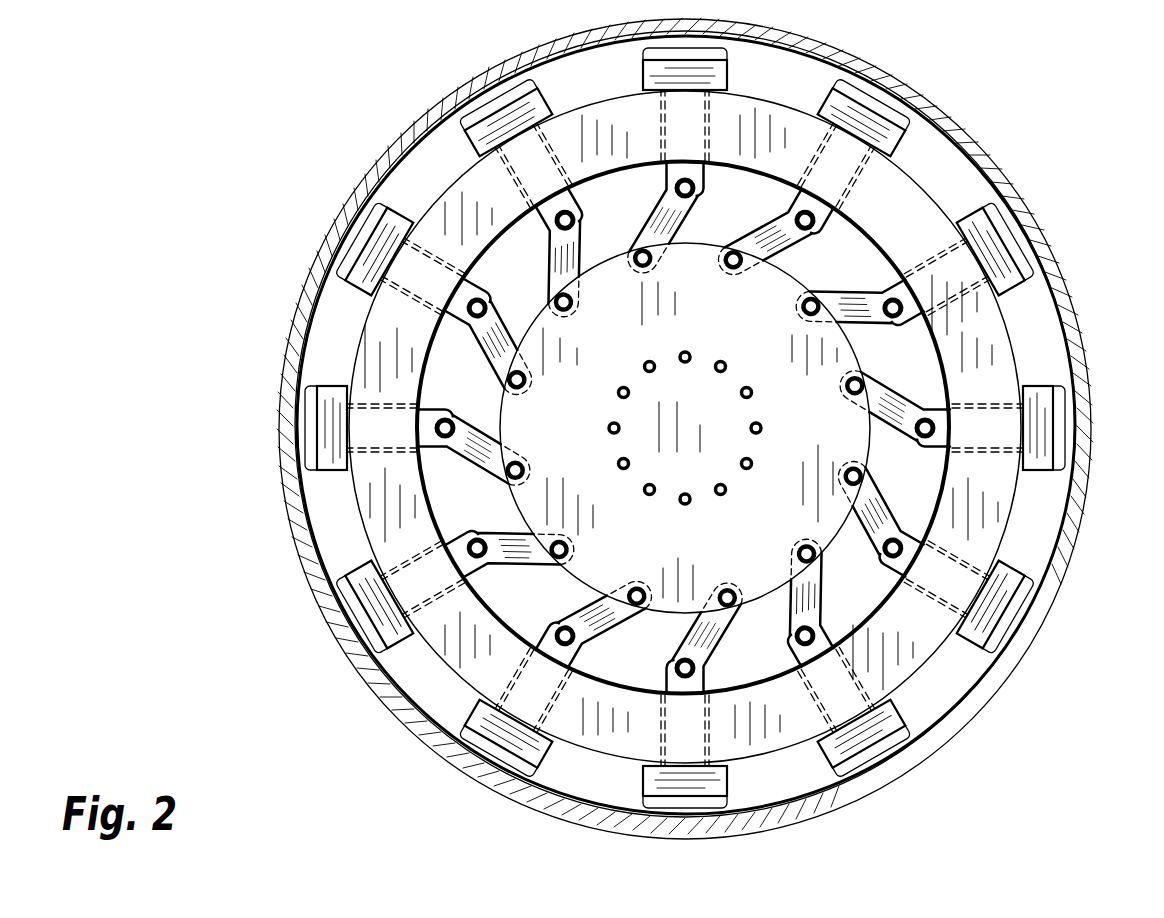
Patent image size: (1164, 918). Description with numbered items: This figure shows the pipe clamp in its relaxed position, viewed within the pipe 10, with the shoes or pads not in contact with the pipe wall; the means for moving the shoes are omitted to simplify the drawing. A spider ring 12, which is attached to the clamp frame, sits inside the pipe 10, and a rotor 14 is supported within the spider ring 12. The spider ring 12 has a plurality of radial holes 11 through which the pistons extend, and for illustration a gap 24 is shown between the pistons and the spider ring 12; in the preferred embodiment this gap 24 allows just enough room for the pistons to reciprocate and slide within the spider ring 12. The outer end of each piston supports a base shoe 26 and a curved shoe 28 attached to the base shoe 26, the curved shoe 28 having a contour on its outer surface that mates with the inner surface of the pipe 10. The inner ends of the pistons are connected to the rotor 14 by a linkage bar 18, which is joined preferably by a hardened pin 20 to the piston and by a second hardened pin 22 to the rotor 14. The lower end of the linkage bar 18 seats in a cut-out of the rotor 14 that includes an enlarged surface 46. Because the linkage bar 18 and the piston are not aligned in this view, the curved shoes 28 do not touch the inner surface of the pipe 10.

The pipe 10 is at (432, 112).
The radial holes 11 is at (962, 290).
The spider ring 12 is at (387, 508).
The rotor 14 is at (760, 575).
The linkage bar 18 is at (800, 256).
The hardened pin 20 is at (888, 300).
The second hardened pin 22 is at (505, 383).
The gap 24 is at (937, 247).
The base shoe 26 is at (975, 238).
The curved shoe 28 is at (987, 243).
The enlarged surface 46 is at (530, 357).